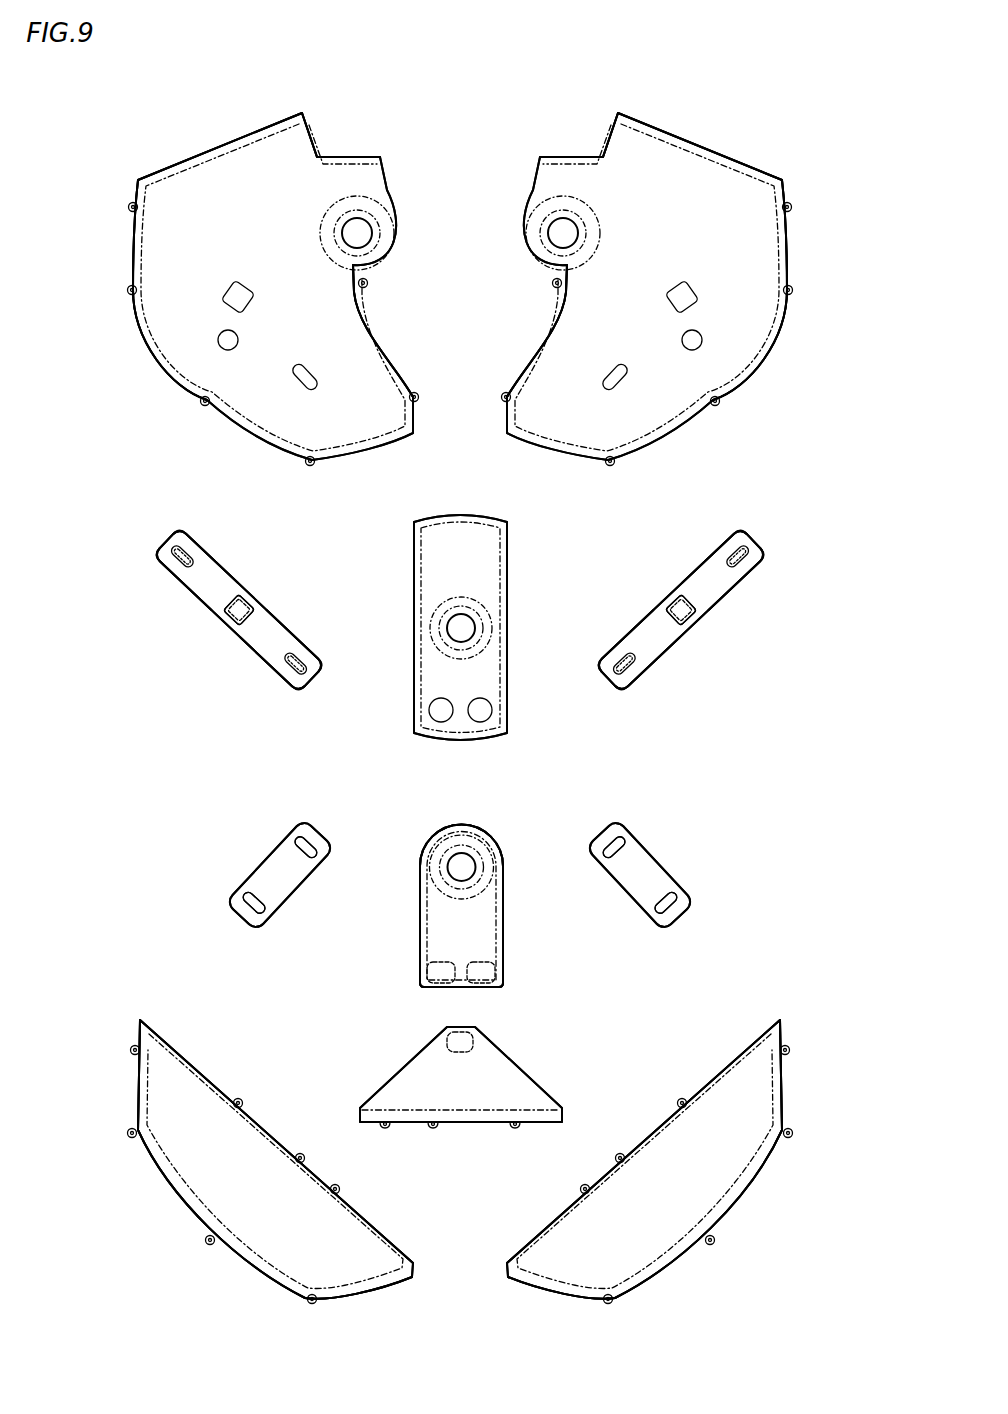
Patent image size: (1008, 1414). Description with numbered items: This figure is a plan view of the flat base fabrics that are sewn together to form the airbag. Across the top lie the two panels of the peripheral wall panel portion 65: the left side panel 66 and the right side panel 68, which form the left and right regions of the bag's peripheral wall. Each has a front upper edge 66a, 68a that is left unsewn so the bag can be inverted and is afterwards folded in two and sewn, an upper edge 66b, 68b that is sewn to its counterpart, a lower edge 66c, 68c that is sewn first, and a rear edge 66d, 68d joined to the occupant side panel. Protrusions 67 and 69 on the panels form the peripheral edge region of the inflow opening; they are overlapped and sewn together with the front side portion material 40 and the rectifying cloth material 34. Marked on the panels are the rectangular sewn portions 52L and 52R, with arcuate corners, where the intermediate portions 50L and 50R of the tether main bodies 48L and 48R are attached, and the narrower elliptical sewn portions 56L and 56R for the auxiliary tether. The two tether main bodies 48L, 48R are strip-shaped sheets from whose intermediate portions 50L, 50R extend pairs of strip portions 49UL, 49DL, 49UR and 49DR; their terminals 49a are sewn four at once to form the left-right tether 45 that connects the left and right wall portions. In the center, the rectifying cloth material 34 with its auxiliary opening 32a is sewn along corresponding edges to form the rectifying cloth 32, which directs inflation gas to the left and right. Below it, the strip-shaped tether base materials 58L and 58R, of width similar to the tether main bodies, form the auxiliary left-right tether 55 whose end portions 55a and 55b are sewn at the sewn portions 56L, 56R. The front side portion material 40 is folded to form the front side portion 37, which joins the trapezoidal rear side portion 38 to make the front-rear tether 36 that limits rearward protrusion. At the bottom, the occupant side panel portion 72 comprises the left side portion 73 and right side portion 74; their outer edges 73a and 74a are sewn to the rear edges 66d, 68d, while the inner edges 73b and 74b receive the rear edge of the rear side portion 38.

The peripheral wall panel portion 65 is at (362, 140).
The left side panel 66 is at (273, 289).
The front upper edge 66a is at (351, 152).
The upper edge 66b is at (242, 138).
The lower edge 66c is at (388, 352).
The rear edge 66d is at (170, 367).
The protrusion 67 is at (378, 187).
The right side panel 68 is at (647, 289).
The front upper edge 68a is at (569, 152).
The upper edge 68b is at (678, 138).
The lower edge 68c is at (532, 352).
The rear edge 68d is at (750, 367).
The protrusion 69 is at (542, 187).
The sewn portion 52L is at (228, 280).
The sewn portion 52R is at (692, 280).
The sewn portion 56L is at (295, 386).
The sewn portion 56R is at (625, 386).
The left-right tether 45 is at (459, 609).
The tether main body 48L is at (207, 622).
The tether main body 48R is at (713, 622).
The strip portion 49UL is at (213, 580).
The strip portion 49DL is at (281, 637).
The strip portion 49UR is at (707, 580).
The strip portion 49DR is at (639, 637).
The terminal 49a is at (168, 553).
The intermediate portion 50L is at (248, 596).
The intermediate portion 50R is at (672, 596).
The rectifying cloth 32 is at (515, 580).
The rectifying cloth material 34 is at (460, 627).
The auxiliary opening 32a is at (480, 724).
The auxiliary left-right tether 55 is at (460, 875).
The tether base material 58L is at (253, 850).
The tether base material 58R is at (667, 850).
The end portion 55a is at (238, 901).
The end portion 55b is at (682, 901).
The front-rear tether 36 is at (662, 947).
The front side portion 37 is at (461, 906).
The front side portion material 40 is at (512, 953).
The rear side portion 38 is at (541, 1058).
The occupant side panel portion 72 is at (410, 1190).
The left side portion 73 is at (384, 1224).
The outer edge 73a is at (185, 1216).
The inner edge 73b is at (281, 1130).
The right side portion 74 is at (536, 1224).
The outer edge 74a is at (735, 1216).
The inner edge 74b is at (639, 1130).